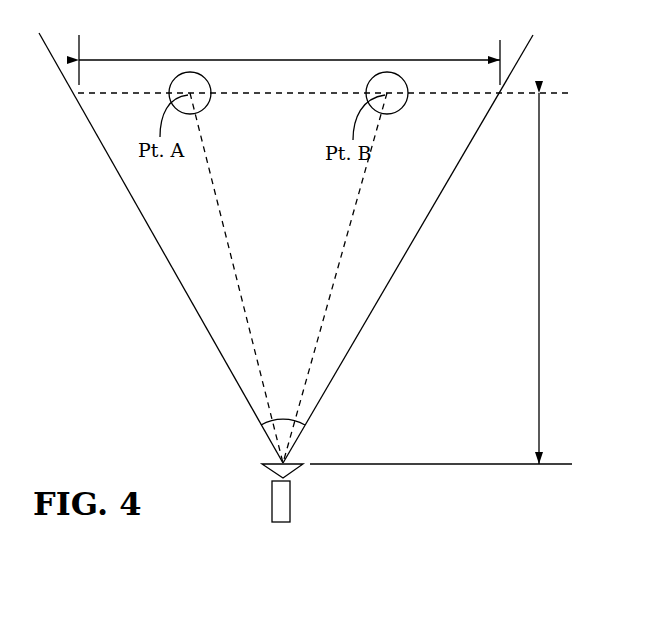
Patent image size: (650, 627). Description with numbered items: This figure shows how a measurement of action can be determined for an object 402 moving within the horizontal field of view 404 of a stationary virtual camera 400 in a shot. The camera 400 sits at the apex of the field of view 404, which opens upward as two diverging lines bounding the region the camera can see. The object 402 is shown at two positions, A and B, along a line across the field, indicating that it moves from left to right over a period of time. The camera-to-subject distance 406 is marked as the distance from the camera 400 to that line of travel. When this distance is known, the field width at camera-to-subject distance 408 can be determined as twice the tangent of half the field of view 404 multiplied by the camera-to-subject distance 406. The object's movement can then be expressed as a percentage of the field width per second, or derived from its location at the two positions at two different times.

The stationary virtual camera 400 is at (290, 503).
The object 402 is at (200, 108).
The field of view 404 is at (305, 423).
The camera-to-subject distance 406 is at (539, 257).
The field width at camera-to-subject distance 408 is at (290, 58).